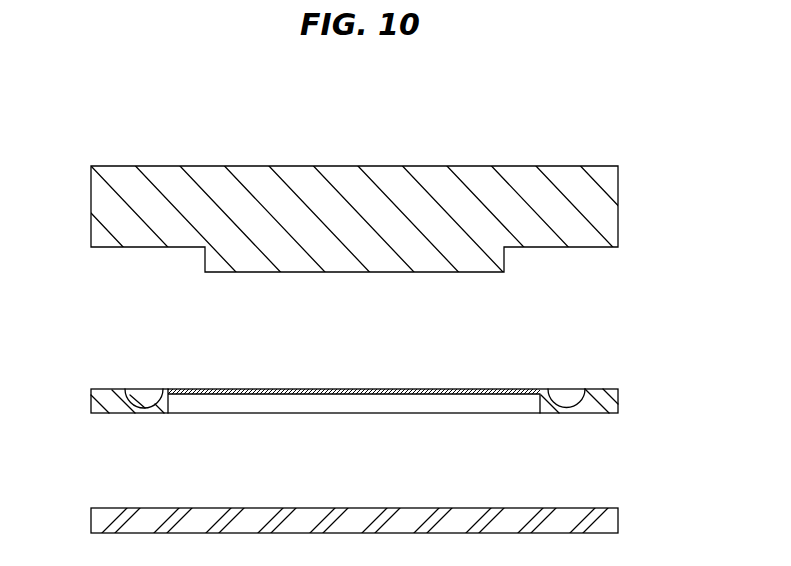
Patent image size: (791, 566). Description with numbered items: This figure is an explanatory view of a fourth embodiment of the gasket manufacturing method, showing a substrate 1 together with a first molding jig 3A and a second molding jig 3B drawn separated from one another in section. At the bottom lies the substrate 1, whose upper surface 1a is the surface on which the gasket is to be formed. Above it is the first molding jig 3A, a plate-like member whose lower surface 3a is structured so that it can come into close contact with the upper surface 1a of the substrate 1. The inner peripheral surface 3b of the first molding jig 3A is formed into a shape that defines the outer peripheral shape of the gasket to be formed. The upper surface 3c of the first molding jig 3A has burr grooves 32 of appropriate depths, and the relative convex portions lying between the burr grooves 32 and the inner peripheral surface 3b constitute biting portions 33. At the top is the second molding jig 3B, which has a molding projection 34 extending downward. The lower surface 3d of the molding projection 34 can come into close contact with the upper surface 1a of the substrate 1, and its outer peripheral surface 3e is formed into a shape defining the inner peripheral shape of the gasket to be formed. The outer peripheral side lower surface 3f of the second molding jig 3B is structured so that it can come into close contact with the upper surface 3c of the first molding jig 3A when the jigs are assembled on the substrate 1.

The substrate 1 is at (458, 511).
The upper surface of substrate 1a is at (375, 508).
The first molding jig 3A is at (602, 389).
The second molding jig 3B is at (423, 182).
The lower surface 3a is at (122, 416).
The inner peripheral surface 3b is at (171, 410).
The upper surface 3c is at (113, 390).
The lower surface 3d is at (388, 273).
The outer peripheral surface 3e is at (507, 258).
The outer peripheral side lower surface 3f is at (556, 250).
The burr grooves 32 is at (143, 405).
The biting portions 33 is at (168, 391).
The molding projection 34 is at (336, 273).